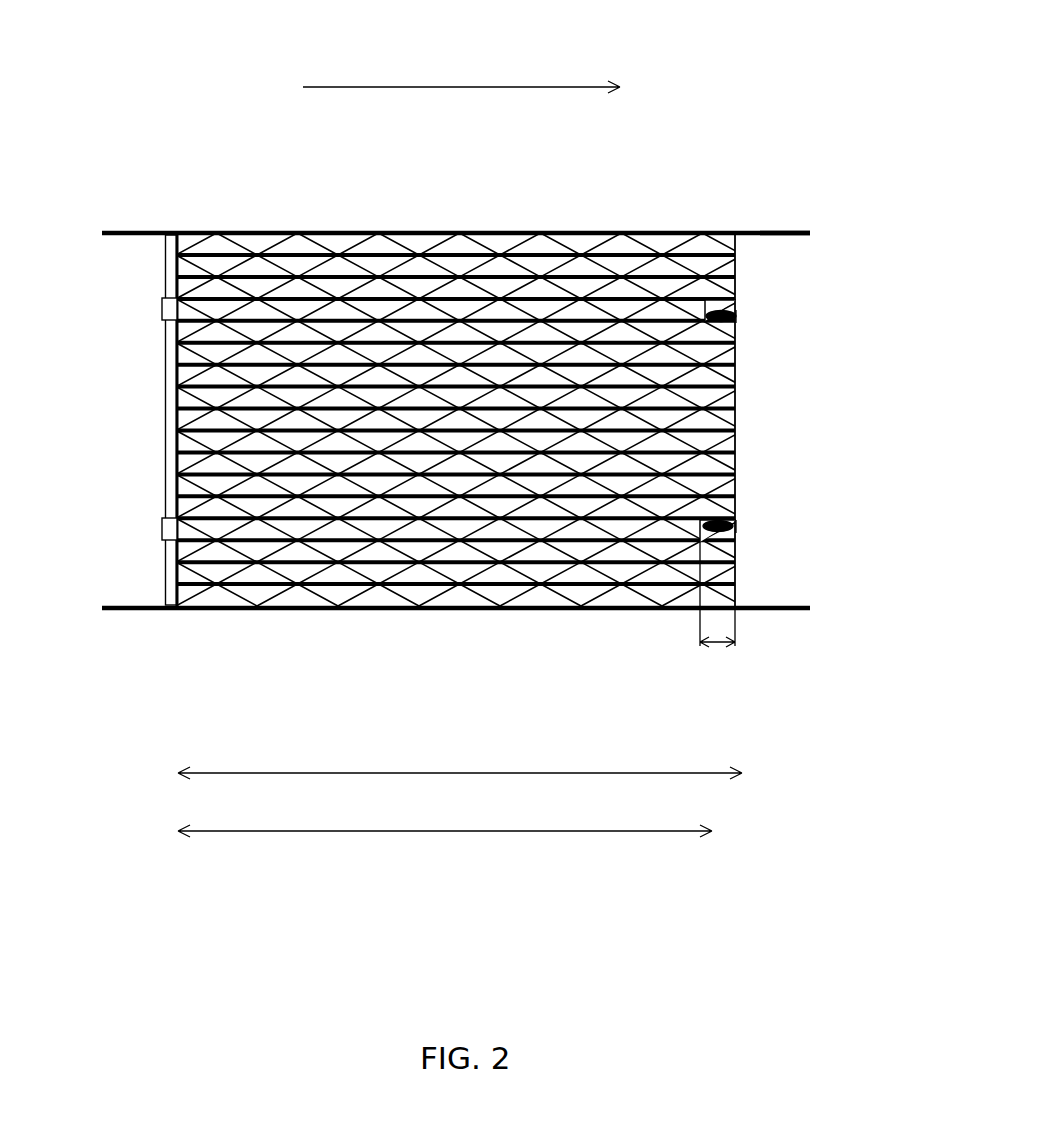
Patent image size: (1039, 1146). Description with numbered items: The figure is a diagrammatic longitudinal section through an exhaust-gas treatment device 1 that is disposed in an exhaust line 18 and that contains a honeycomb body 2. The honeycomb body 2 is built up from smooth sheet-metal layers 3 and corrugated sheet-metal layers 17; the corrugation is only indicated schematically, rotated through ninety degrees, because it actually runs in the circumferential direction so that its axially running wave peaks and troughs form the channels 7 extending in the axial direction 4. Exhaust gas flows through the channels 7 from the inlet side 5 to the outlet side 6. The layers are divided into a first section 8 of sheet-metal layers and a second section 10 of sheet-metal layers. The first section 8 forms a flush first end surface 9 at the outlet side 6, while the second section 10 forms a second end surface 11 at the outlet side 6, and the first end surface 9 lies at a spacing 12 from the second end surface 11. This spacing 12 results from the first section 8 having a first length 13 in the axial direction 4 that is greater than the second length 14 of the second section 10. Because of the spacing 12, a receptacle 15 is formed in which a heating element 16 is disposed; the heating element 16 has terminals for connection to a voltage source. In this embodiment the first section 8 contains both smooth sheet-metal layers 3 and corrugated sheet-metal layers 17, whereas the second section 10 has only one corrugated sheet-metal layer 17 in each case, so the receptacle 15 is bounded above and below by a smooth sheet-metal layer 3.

The exhaust-gas treatment device 1 is at (165, 114).
The honeycomb body 2 is at (350, 232).
The smooth sheet-metal layer 3 is at (528, 232).
The axial direction 4 is at (530, 88).
The inlet side 5 is at (113, 594).
The outlet side 6 is at (780, 588).
The channel 7 is at (465, 612).
The first section of sheet-metal layers 8 is at (165, 263).
The first end surface 9 is at (740, 232).
The second section of sheet-metal layers 10 is at (163, 310).
The second end surface 11 is at (712, 298).
The spacing 12 is at (716, 648).
The first length 13 is at (350, 772).
The second length 14 is at (475, 833).
The receptacle 15 is at (737, 302).
The heating element 16 is at (740, 318).
The corrugated sheet-metal layer 17 is at (600, 232).
The exhaust line 18 is at (788, 232).